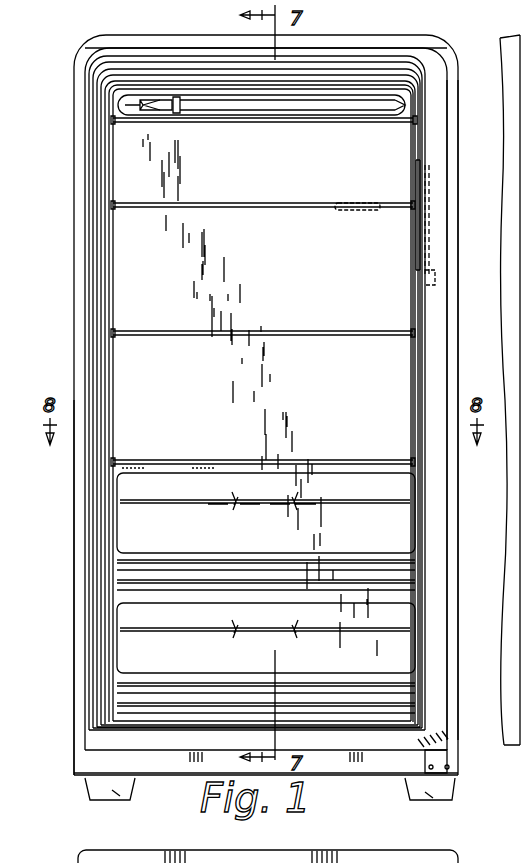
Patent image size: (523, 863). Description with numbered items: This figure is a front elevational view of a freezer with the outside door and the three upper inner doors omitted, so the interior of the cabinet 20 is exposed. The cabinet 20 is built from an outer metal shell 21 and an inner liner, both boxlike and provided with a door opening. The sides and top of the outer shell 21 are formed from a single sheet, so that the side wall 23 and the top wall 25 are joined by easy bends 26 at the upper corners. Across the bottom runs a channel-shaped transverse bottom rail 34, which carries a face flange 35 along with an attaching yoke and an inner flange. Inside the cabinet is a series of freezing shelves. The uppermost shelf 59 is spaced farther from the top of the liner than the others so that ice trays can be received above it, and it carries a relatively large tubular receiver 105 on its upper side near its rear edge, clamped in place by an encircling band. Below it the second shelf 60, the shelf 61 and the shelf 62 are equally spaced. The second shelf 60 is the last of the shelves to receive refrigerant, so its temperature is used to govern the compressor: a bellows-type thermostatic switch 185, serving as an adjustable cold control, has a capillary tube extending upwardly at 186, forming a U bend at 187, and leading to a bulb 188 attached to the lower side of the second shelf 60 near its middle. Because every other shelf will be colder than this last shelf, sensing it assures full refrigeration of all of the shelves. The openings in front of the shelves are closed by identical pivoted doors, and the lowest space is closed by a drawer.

The cabinet 20 is at (67, 184).
The outer metal shell 21 is at (468, 192).
The side wall 23 is at (74, 492).
The top wall 25 is at (345, 36).
The easy bends 26 is at (95, 50).
The transverse bottom rail 34 is at (176, 768).
The face flange 35 is at (392, 765).
The uppermost shelf 59 is at (328, 130).
The second shelf 60 is at (278, 204).
The freezing shelf 61 is at (320, 332).
The freezing shelf 62 is at (210, 460).
The tubular receiver 105 is at (295, 105).
The thermostatic switch 185 is at (440, 278).
The capillary tube 186 is at (440, 220).
The U bend 187 is at (423, 166).
The bulb 188 is at (357, 212).